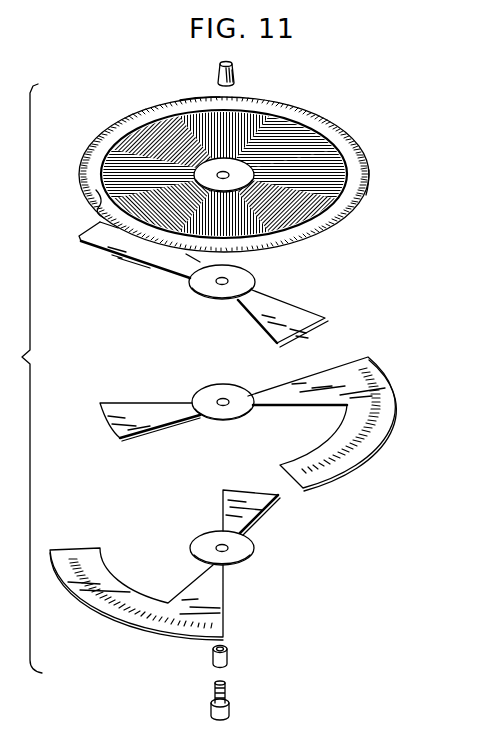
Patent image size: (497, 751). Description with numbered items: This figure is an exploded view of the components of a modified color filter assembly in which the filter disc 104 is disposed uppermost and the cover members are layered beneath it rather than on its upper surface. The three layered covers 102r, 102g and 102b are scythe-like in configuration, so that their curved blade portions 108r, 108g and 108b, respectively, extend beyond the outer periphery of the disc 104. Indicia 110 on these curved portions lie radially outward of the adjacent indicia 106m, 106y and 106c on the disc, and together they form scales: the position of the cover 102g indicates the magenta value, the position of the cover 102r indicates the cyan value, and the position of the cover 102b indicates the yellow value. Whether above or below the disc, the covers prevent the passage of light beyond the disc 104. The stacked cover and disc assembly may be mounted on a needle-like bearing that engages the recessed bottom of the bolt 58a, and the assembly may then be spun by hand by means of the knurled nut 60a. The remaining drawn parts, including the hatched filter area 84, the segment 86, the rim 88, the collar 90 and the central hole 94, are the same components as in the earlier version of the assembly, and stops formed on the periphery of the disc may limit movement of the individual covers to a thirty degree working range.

The bolt 58a is at (240, 716).
The knurled nut 60a is at (242, 70).
The hatched color filter area of disc 84 is at (210, 120).
The filter segment of disc 86 is at (330, 160).
The inner rim of disc 88 is at (320, 222).
The spacer collar 90 is at (230, 652).
The pivot hole 94 is at (253, 272).
The cover 102r is at (244, 284).
The cover 102g is at (147, 392).
The cover 102b is at (272, 526).
The filter disc 104 is at (382, 158).
The indicia 106c is at (207, 101).
The indicia 106m is at (372, 184).
The indicia 106y is at (100, 198).
The curved blade portion 108r is at (81, 256).
The curved blade portion 108g is at (352, 472).
The curved blade portion 108b is at (139, 630).
The indicia 110 is at (100, 192).